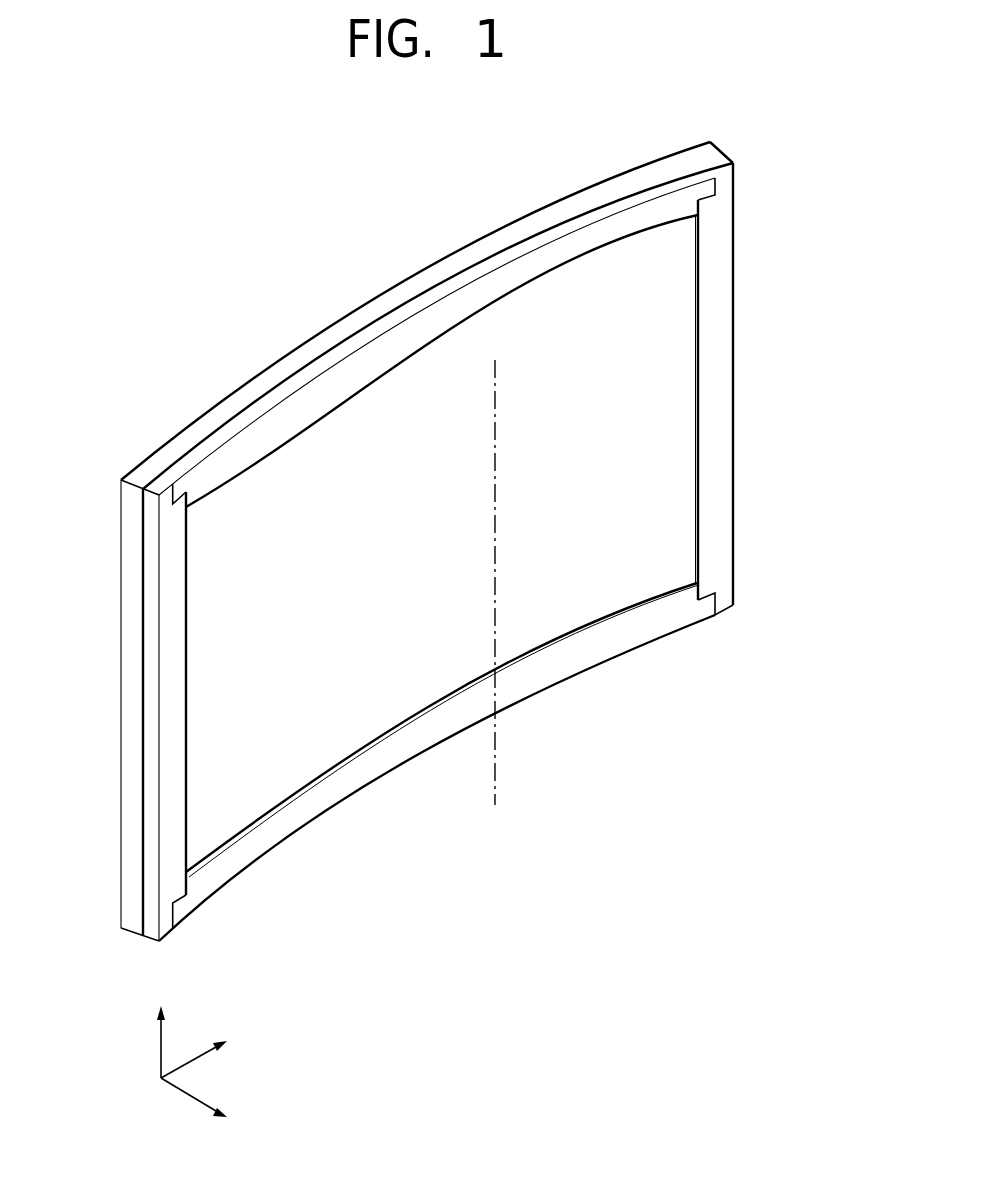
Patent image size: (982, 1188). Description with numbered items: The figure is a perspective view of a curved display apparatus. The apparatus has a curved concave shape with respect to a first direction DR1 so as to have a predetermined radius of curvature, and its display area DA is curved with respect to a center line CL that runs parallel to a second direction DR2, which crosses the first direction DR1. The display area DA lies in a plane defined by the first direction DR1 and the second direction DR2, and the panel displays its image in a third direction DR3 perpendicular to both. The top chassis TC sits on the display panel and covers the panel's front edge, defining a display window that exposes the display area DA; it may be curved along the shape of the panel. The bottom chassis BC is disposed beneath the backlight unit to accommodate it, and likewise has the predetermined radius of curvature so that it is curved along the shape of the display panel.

The bottom chassis BC is at (150, 481).
The top chassis TC is at (722, 384).
The display area DA is at (574, 546).
The center line CL is at (493, 568).
The first direction DR1 is at (214, 1053).
The second direction DR2 is at (160, 1029).
The third direction DR3 is at (214, 1104).